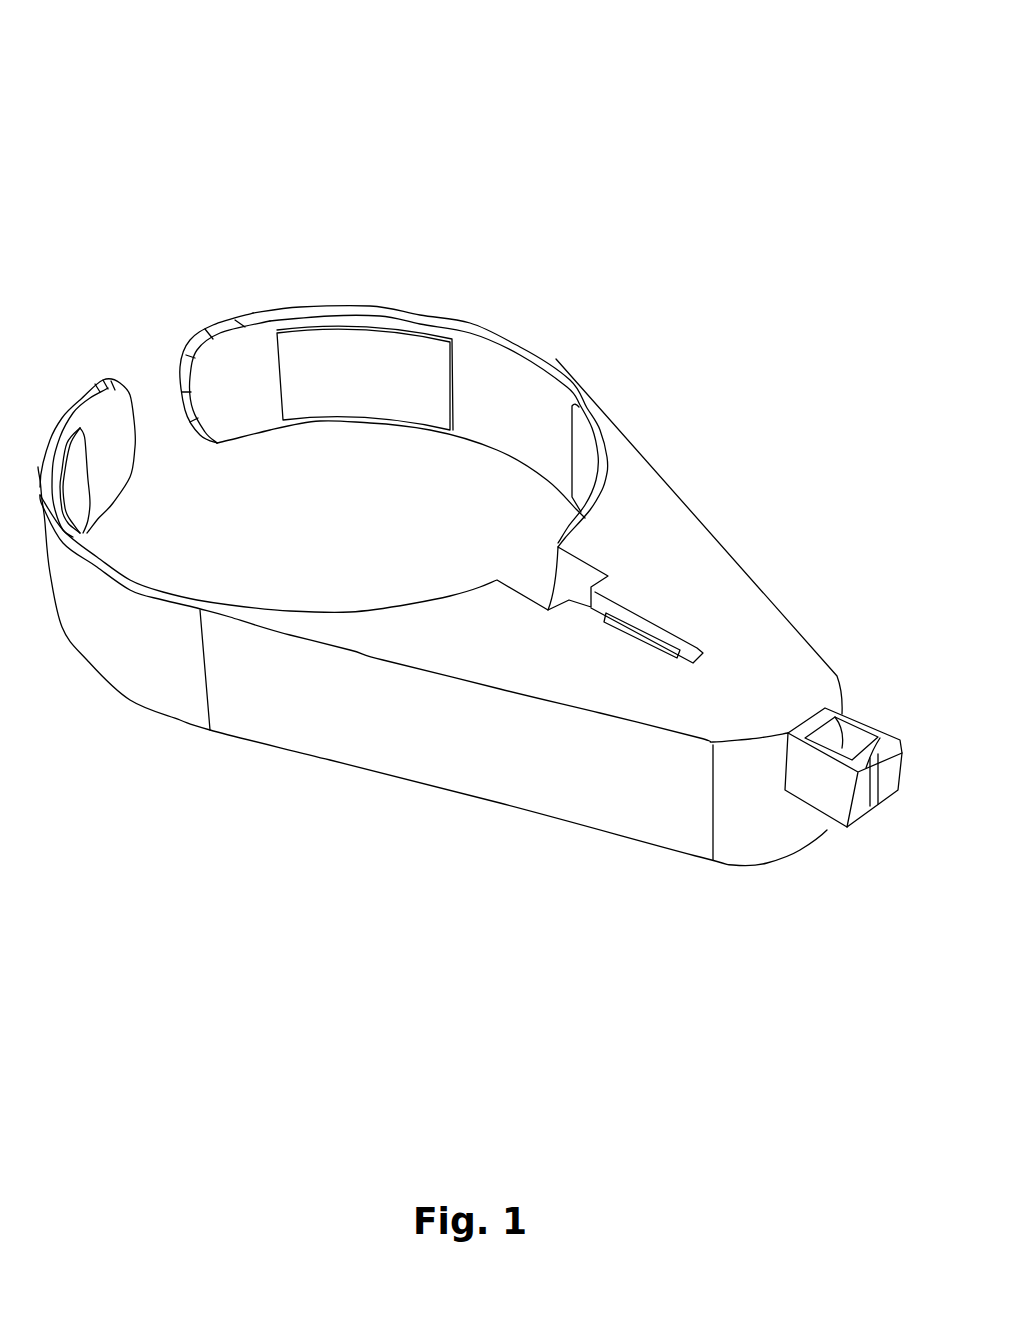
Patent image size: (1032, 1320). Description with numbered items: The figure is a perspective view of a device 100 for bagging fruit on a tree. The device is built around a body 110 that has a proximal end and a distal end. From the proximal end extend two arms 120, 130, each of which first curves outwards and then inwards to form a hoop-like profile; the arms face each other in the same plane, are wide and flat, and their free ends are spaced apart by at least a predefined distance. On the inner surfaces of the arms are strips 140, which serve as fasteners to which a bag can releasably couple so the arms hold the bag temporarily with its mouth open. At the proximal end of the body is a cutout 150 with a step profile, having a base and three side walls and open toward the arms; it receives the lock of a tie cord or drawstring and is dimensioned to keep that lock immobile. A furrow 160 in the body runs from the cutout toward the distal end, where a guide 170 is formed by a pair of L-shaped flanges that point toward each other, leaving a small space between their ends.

The device 100 is at (607, 128).
The body 110 is at (687, 527).
The arm 120 is at (240, 318).
The arm 130 is at (72, 400).
The strips 140 is at (390, 365).
The cutout 150 is at (536, 603).
The furrow 160 is at (650, 645).
The guide 170 is at (897, 733).